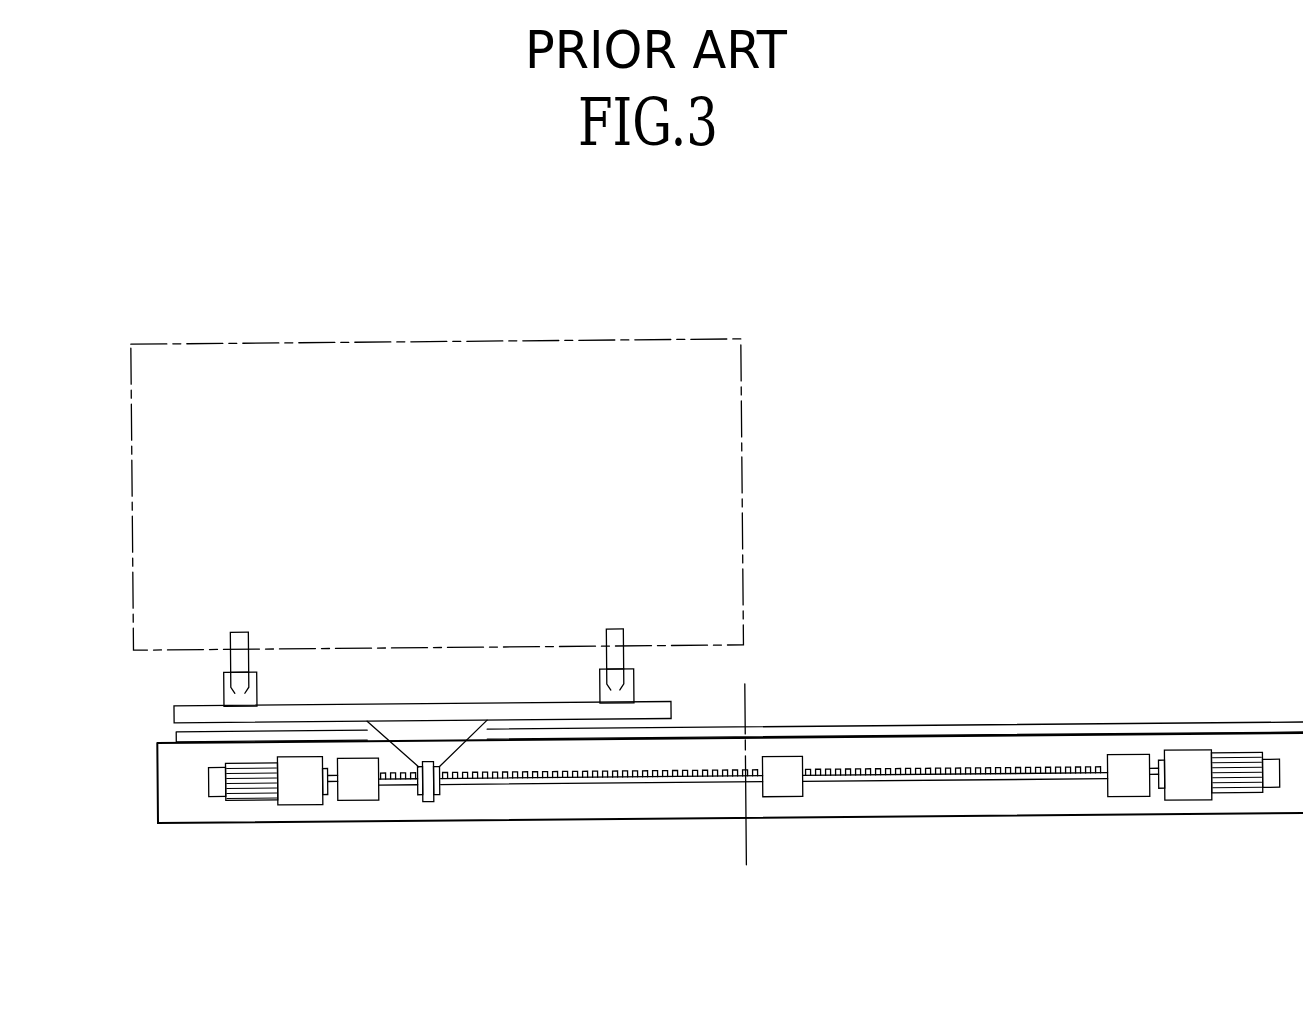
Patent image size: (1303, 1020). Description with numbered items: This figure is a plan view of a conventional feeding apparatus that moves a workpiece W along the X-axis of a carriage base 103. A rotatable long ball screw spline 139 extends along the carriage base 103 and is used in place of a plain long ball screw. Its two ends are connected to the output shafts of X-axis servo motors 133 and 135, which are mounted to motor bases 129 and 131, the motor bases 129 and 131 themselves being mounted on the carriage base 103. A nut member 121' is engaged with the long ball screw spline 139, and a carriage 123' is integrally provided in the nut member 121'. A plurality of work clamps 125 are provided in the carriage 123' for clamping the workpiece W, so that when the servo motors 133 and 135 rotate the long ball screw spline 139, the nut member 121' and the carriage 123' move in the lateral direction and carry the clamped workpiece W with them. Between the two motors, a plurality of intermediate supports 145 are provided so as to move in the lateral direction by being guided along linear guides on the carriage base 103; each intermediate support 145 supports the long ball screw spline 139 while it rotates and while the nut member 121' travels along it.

The workpiece W is at (634, 340).
The carriage base 103 is at (612, 823).
The nut member 121' is at (426, 829).
The carriage 123' is at (427, 709).
The work clamps 125 is at (232, 668).
The motor base 129 is at (302, 796).
The motor base 131 is at (1183, 809).
The X-axis servo motor 133 is at (241, 798).
The X-axis servo motor 135 is at (1240, 802).
The long ball screw spline 139 is at (960, 770).
The intermediate supports 145 is at (363, 802).